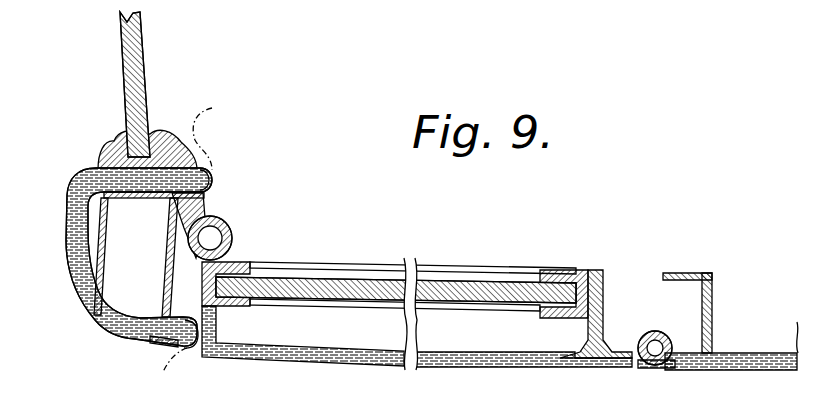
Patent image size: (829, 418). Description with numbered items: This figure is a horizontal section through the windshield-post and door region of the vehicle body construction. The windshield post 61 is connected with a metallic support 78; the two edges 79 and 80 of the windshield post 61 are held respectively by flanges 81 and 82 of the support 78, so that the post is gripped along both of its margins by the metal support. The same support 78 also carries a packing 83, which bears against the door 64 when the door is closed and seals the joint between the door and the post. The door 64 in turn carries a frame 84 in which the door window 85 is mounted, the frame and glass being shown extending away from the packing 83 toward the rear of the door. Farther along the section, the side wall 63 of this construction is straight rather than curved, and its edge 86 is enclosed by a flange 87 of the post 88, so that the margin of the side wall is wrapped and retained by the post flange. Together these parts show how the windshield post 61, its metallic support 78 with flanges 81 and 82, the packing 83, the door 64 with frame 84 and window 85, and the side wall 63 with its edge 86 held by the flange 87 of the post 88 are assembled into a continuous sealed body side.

The windshield post 61 is at (68, 204).
The side wall 63 is at (752, 367).
The door 64 is at (512, 360).
The metallic support 78 is at (140, 283).
The edge of windshield post 79 is at (163, 347).
The edge of windshield post 80 is at (208, 187).
The flange of support 81 is at (188, 348).
The flange of support 82 is at (205, 176).
The packing 83 is at (232, 240).
The frame 84 is at (381, 270).
The door window 85 is at (330, 283).
The edge of side wall 86 is at (660, 337).
The flange of post 87 is at (650, 368).
The post 88 is at (712, 290).